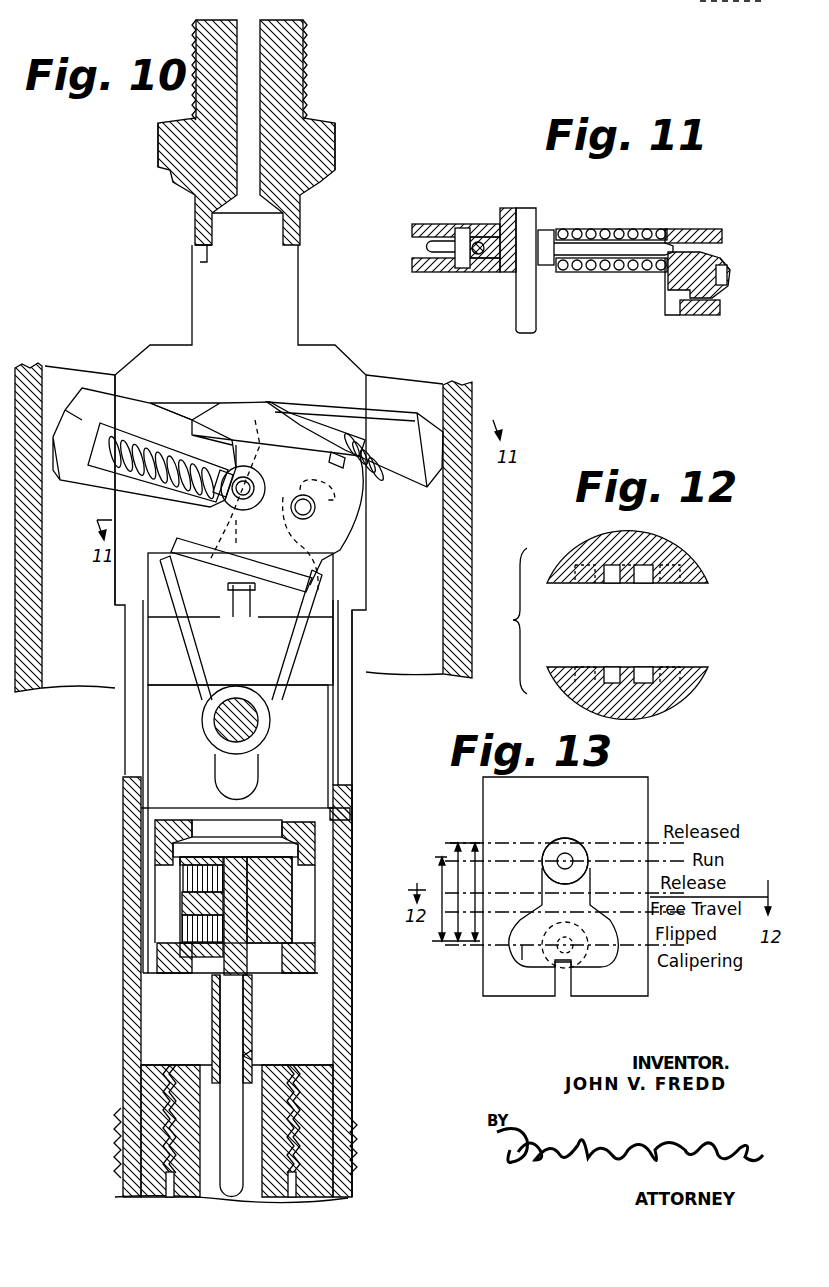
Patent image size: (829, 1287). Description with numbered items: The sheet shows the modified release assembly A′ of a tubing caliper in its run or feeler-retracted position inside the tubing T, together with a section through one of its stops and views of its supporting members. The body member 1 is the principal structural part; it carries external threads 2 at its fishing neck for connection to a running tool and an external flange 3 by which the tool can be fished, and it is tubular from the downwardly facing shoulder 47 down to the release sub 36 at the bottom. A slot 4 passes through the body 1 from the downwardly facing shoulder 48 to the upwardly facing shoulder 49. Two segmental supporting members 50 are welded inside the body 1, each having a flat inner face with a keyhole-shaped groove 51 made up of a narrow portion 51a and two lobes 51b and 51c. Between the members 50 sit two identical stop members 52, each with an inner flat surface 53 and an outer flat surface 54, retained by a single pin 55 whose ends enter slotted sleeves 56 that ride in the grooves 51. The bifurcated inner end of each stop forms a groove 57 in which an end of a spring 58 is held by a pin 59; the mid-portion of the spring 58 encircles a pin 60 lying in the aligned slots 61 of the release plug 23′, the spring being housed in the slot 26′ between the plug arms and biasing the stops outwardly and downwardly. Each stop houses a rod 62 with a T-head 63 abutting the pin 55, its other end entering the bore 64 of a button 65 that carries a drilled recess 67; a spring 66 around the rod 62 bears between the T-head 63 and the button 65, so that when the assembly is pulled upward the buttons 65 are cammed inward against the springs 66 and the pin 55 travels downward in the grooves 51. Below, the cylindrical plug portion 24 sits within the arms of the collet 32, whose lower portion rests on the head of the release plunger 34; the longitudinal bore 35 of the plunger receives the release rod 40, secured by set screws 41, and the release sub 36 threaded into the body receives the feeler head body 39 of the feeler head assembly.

In FIG. 10, the body member 1 is at (303, 275).
In FIG. 10, the external threads 2 is at (303, 70).
In FIG. 10, the external flange 3 is at (332, 152).
In FIG. 10, the slot 4 is at (338, 357).
In FIG. 10, the downwardly facing shoulder 48 is at (200, 264).
In FIG. 10, the release assembly A′ is at (168, 344).
In FIG. 10, the tubing T is at (456, 526).
In FIG. 10, the stop members 52 is at (88, 408).
In FIG. 11, the stop members 52 is at (720, 233).
In FIG. 10, the downwardly facing shoulder 47 is at (190, 403).
In FIG. 10, the spring 66 is at (127, 475).
In FIG. 11, the spring 66 is at (590, 232).
In FIG. 10, the slotted sleeve 56 is at (238, 468).
In FIG. 11, the slotted sleeve 56 is at (505, 232).
In FIG. 13, the slotted sleeve 56 is at (570, 853).
In FIG. 10, the pin 55 is at (247, 487).
In FIG. 11, the pin 55 is at (528, 313).
In FIG. 13, the pin 55 is at (568, 858).
In FIG. 10, the pin 59 is at (308, 511).
In FIG. 11, the pin 59 is at (465, 236).
In FIG. 10, the spring 58 is at (176, 598).
In FIG. 11, the spring 58 is at (428, 247).
In FIG. 10, the segmental supporting members 50 is at (163, 622).
In FIG. 12, the segmental supporting members 50 is at (690, 560).
In FIG. 13, the segmental supporting members 50 is at (635, 798).
In FIG. 10, the keyhole-shaped groove 51 is at (268, 580).
In FIG. 12, the keyhole-shaped groove 51 is at (642, 585).
In FIG. 13, the keyhole-shaped groove 51 is at (572, 889).
In FIG. 10, the pin 60 is at (226, 722).
In FIG. 10, the slots 61 is at (247, 770).
In FIG. 10, the slot 26′ is at (155, 770).
In FIG. 10, the upwardly facing shoulder 49 is at (343, 783).
In FIG. 10, the release plug 23′ is at (350, 810).
In FIG. 10, the cylindrical plug portion 24 is at (300, 848).
In FIG. 10, the collet 32 is at (333, 876).
In FIG. 10, the set screws 41 is at (183, 926).
In FIG. 10, the release plunger 34 is at (213, 1012).
In FIG. 10, the longitudinal bore 35 is at (235, 1057).
In FIG. 10, the release sub 36 is at (146, 1140).
In FIG. 10, the release rod 40 is at (232, 1122).
In FIG. 10, the feeler head body 39 is at (272, 1184).
In FIG. 11, the groove 57 is at (493, 245).
In FIG. 11, the T-head 63 is at (546, 236).
In FIG. 11, the rod 62 is at (632, 248).
In FIG. 11, the inner flat surface 53 is at (615, 274).
In FIG. 11, the outer flat surface 54 is at (675, 231).
In FIG. 11, the bore 64 is at (692, 255).
In FIG. 11, the button 65 is at (723, 254).
In FIG. 11, the drilled recess 67 is at (728, 275).
In FIG. 13, the groove portion of small width 51a is at (552, 830).
In FIG. 12, the lobe 51b is at (678, 588).
In FIG. 13, the lobe 51b is at (605, 955).
In FIG. 12, the lobe 51c is at (585, 585).
In FIG. 13, the lobe 51c is at (522, 953).